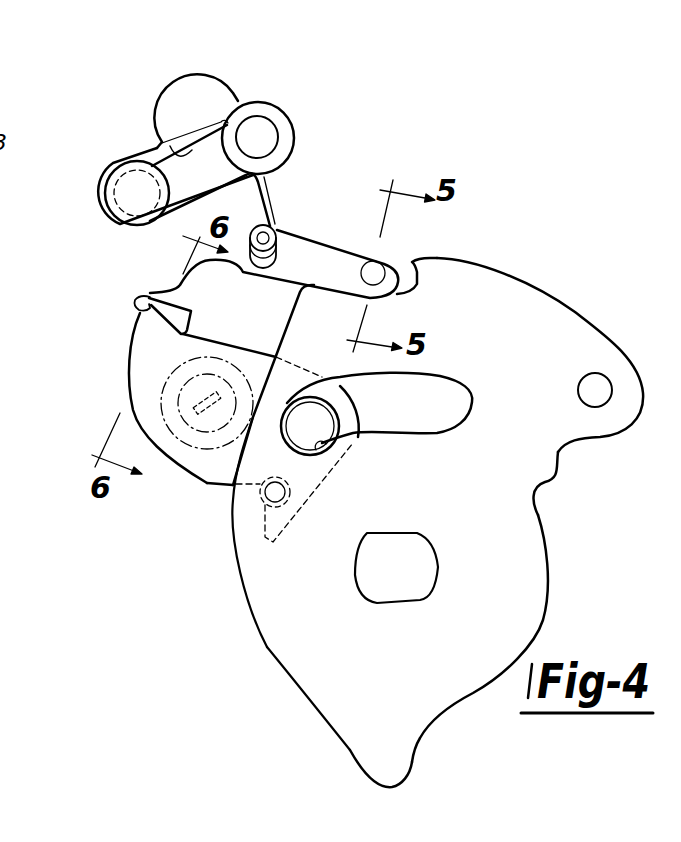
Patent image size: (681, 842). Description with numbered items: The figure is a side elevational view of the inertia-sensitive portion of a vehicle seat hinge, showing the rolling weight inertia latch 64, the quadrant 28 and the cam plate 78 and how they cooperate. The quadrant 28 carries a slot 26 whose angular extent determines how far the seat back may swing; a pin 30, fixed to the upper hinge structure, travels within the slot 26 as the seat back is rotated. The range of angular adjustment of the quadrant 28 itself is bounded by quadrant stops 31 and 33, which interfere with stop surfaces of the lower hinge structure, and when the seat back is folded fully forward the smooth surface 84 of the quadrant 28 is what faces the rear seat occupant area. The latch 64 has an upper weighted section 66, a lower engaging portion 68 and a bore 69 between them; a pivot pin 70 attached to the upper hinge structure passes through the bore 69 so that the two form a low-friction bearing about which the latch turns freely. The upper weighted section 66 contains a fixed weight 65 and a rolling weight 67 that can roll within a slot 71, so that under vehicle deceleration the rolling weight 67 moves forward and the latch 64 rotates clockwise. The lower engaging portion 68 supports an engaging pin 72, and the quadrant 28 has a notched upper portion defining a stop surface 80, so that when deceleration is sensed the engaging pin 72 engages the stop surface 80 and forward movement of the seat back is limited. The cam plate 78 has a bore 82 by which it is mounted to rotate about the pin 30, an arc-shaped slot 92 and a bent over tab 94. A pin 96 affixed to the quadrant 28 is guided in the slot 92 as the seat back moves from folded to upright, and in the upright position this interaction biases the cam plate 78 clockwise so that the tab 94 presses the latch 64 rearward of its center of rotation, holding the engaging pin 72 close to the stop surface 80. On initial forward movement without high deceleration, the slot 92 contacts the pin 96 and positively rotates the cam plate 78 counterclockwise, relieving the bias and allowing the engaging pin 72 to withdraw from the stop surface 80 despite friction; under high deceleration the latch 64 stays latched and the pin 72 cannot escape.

The slot 26 is at (433, 386).
The quadrant 28 is at (578, 313).
The pin 30 is at (293, 432).
The quadrant stop 31 is at (558, 500).
The quadrant stop 33 is at (418, 750).
The rolling weight inertia latch 64 is at (238, 80).
The fixed weight 65 is at (262, 131).
The upper weighted section 66 is at (294, 130).
The rolling weight 67 is at (122, 187).
The lower engaging portion 68 is at (332, 246).
The bore 69 is at (259, 231).
The pivot pin 70 is at (277, 232).
The slot 71 is at (163, 143).
The engaging pin 72 is at (377, 273).
The cam plate 78 is at (170, 458).
The stop surface 80 is at (420, 265).
The bore 82 is at (331, 452).
The surface 84 is at (267, 648).
The arc-shaped slot 92 is at (263, 512).
The bent over tab 94 is at (142, 299).
The pin 96 is at (265, 495).